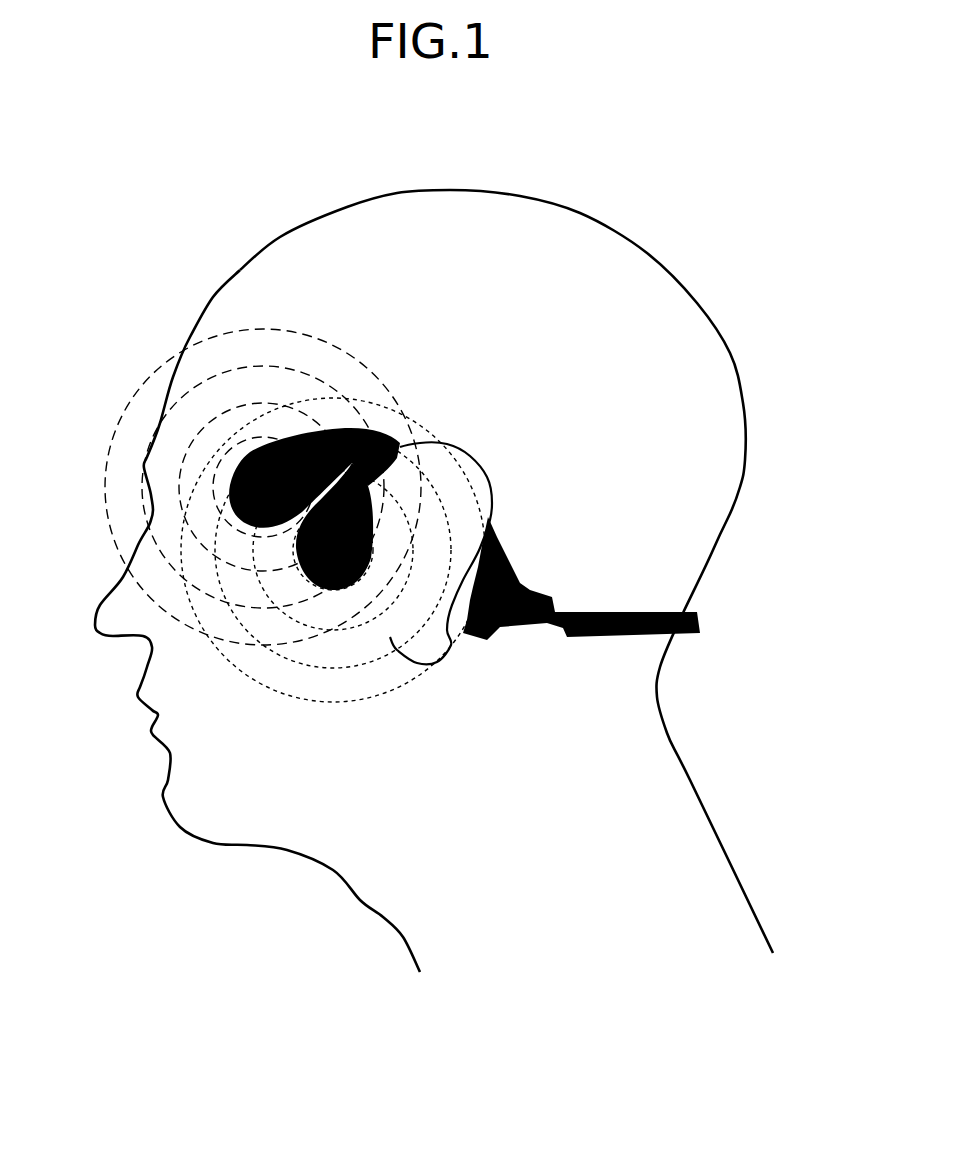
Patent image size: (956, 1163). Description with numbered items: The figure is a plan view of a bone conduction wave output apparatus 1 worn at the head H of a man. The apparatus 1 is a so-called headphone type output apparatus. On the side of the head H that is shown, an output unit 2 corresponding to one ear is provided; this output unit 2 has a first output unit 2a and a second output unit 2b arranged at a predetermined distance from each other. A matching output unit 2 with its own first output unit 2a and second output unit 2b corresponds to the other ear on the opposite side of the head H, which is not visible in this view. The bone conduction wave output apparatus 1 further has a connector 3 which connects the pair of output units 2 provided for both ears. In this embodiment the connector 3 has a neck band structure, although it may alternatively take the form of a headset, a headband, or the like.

The head H is at (238, 269).
The bone conduction wave output apparatus 1 is at (464, 626).
The output unit 2 is at (357, 626).
The first output unit 2a is at (347, 587).
The second output unit 2b is at (273, 527).
The connector 3 is at (565, 636).